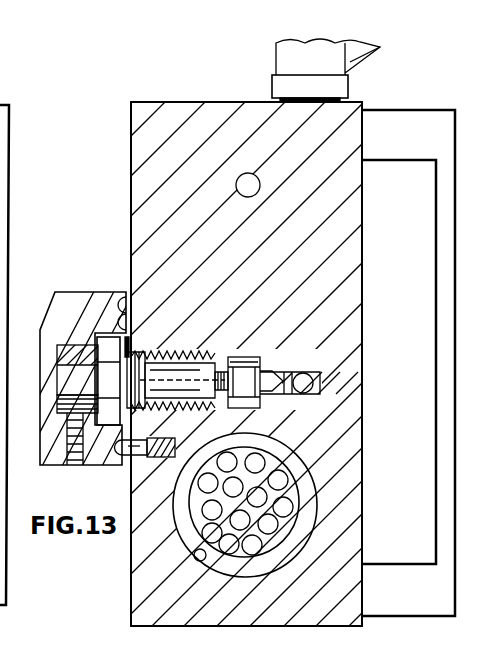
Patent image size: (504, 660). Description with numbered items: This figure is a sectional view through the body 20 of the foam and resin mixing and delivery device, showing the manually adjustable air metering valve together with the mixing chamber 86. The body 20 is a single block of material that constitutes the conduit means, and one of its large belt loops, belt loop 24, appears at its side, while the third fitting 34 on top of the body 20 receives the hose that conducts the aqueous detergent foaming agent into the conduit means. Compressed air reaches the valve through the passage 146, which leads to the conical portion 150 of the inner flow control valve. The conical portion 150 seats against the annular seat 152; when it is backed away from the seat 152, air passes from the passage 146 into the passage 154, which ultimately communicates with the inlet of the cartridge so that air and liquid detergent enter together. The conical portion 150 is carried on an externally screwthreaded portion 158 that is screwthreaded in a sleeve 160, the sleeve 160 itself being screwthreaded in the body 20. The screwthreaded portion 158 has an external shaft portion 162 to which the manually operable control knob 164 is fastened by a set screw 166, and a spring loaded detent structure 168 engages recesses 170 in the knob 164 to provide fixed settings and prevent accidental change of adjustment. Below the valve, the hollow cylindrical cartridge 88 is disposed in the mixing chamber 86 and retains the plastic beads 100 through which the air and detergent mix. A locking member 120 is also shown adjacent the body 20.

The body 20 is at (131, 127).
The belt loop 24 is at (437, 410).
The third fitting 34 is at (305, 63).
The mixing chamber 86 is at (205, 556).
The hollow cylindrical cartridge 88 is at (318, 497).
The plastic beads 100 is at (265, 527).
The locking member 120 is at (126, 458).
The passage 146 is at (322, 366).
The conical portion 150 is at (314, 391).
The annular seat 152 is at (268, 365).
The passage 154 is at (258, 352).
The externally screwthreaded portion 158 is at (195, 360).
The sleeve 160 is at (268, 414).
The external shaft portion 162 is at (72, 373).
The control knob 164 is at (55, 442).
The set screw 166 is at (83, 462).
The spring loaded detent structure 168 is at (131, 500).
The recesses 170 is at (168, 353).